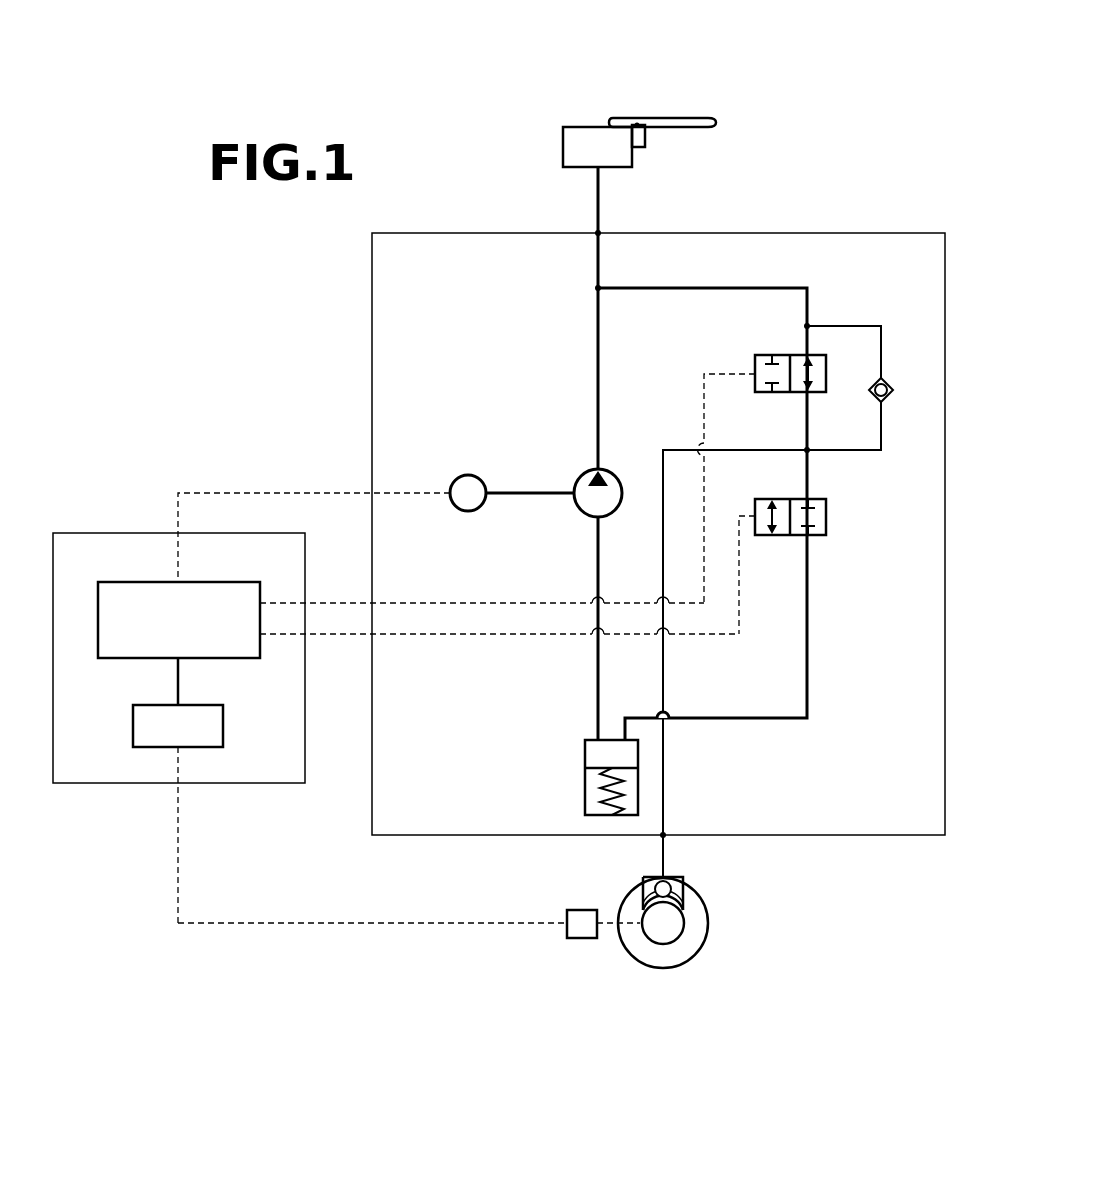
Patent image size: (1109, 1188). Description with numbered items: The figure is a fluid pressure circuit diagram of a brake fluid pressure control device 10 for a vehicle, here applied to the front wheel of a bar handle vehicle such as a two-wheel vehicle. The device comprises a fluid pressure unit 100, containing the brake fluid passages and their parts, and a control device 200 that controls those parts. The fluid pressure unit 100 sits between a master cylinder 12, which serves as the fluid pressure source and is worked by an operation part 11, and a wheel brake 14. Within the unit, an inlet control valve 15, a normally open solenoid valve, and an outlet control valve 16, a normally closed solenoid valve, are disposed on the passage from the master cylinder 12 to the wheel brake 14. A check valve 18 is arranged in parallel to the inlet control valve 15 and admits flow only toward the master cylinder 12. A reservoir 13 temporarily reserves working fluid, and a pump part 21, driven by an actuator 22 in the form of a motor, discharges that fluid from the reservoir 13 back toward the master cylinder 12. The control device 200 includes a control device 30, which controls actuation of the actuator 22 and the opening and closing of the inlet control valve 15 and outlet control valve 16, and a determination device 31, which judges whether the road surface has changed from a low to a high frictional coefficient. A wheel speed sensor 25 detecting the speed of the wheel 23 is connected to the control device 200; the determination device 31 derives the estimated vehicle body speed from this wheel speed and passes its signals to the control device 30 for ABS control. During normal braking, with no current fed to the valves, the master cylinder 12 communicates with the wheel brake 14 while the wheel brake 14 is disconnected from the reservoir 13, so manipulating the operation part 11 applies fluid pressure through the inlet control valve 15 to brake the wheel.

The brake fluid pressure control device 10 is at (850, 92).
The fluid pressure unit 100 is at (848, 231).
The control device 200 is at (251, 787).
The operation part 11 is at (713, 121).
The master cylinder 12 is at (592, 138).
The reservoir 13 is at (590, 755).
The wheel brake 14 is at (683, 897).
The inlet control valve 15 is at (762, 355).
The outlet control valve 16 is at (766, 499).
The check valve 18 is at (890, 393).
The pump part 21 is at (583, 474).
The actuator 22 is at (468, 474).
The wheel 23 is at (706, 955).
The wheel speed sensor 25 is at (581, 940).
The control device 30 is at (219, 582).
The determination device 31 is at (223, 723).